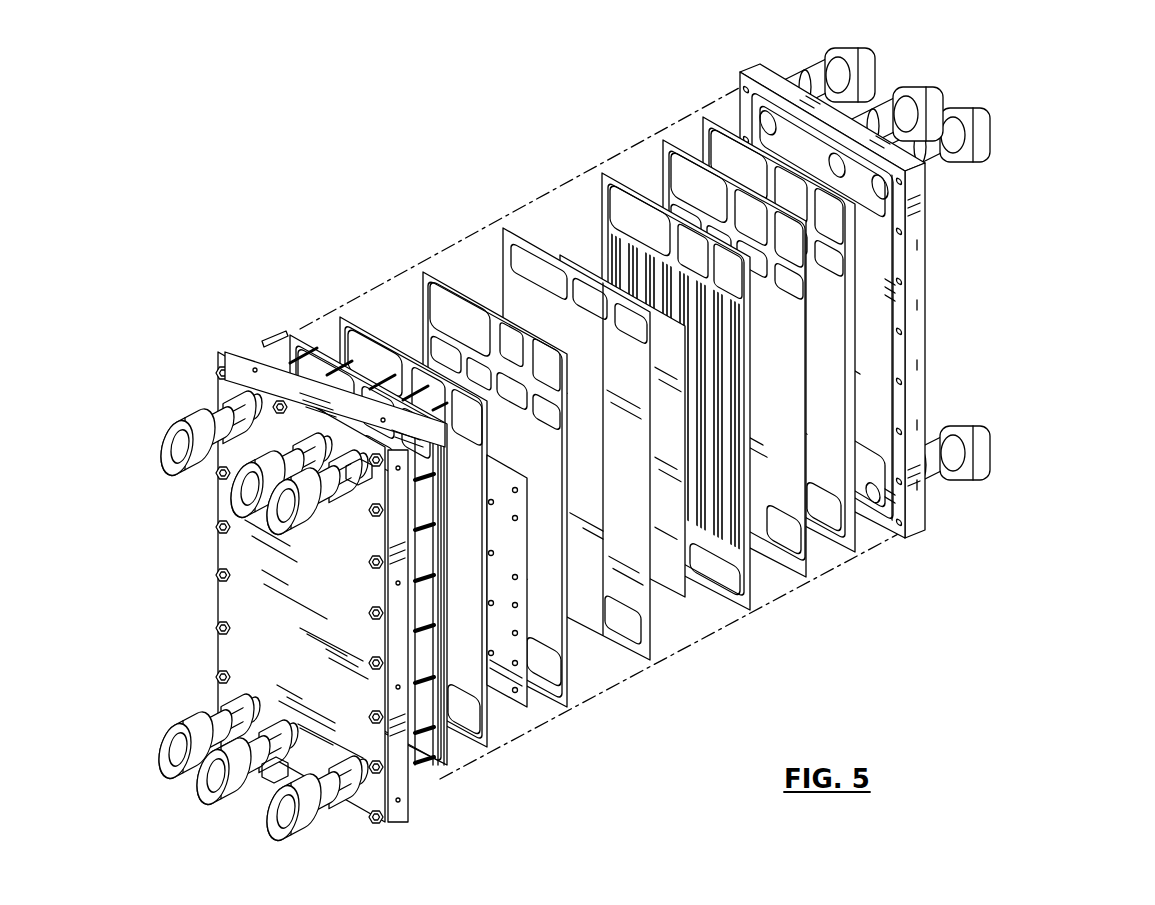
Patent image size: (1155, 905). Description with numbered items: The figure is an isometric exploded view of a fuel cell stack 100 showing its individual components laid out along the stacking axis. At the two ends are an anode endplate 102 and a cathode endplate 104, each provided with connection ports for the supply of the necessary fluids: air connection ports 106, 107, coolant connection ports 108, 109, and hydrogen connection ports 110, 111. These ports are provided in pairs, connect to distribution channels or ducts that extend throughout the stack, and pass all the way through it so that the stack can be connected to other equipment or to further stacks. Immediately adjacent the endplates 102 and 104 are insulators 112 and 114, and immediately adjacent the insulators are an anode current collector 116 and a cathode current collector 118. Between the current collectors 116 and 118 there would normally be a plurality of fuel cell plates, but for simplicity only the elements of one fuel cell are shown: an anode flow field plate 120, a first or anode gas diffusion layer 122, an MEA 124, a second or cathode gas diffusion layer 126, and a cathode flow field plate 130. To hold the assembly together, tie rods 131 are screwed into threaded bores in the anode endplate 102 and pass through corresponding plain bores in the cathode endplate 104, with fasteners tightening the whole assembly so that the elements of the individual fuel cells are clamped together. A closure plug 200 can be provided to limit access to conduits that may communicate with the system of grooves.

The fuel cell stack 100 is at (601, 448).
The anode endplate 102 is at (918, 342).
The cathode endplate 104 is at (268, 668).
The air connection port 106 is at (165, 455).
The air connection port 107 is at (298, 838).
The coolant connection port 108 is at (232, 488).
The coolant connection port 109 is at (200, 783).
The hydrogen connection port 110 is at (262, 535).
The hydrogen connection port 111 is at (157, 740).
The insulator 112 is at (714, 120).
The insulator 114 is at (300, 332).
The anode current collector 116 is at (662, 146).
The cathode current collector 118 is at (340, 315).
The anode flow field plate 120 is at (603, 178).
The anode gas diffusion layer 122 is at (584, 263).
The MEA 124 is at (513, 227).
The cathode gas diffusion layer 126 is at (480, 290).
The cathode flow field plate 130 is at (468, 455).
The tie rods 131 is at (262, 338).
The closure plug 200 is at (362, 478).